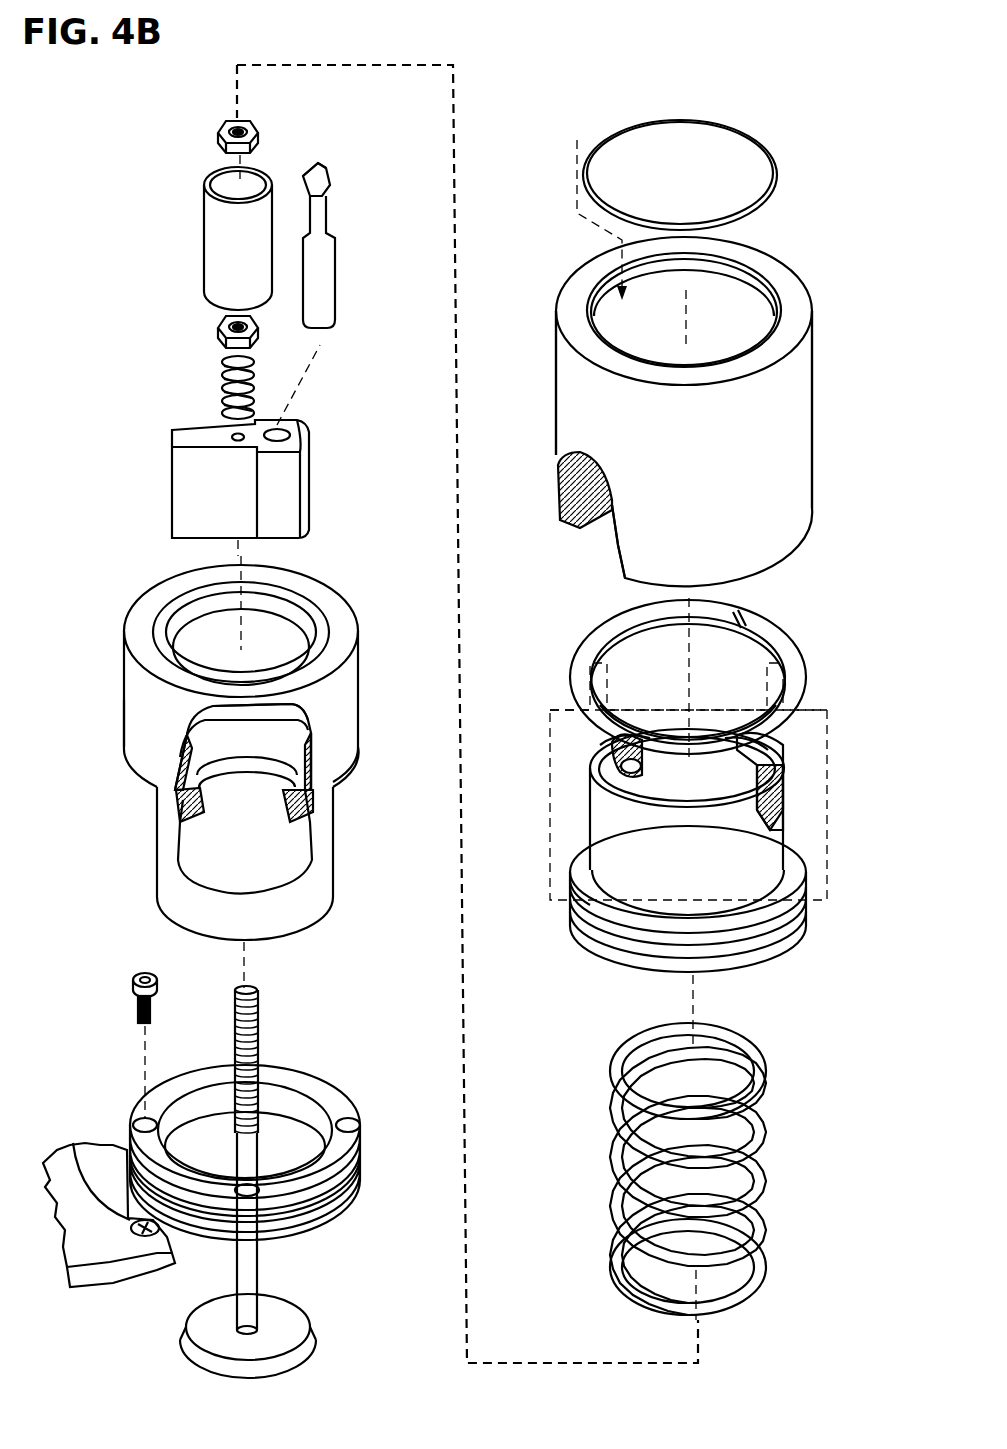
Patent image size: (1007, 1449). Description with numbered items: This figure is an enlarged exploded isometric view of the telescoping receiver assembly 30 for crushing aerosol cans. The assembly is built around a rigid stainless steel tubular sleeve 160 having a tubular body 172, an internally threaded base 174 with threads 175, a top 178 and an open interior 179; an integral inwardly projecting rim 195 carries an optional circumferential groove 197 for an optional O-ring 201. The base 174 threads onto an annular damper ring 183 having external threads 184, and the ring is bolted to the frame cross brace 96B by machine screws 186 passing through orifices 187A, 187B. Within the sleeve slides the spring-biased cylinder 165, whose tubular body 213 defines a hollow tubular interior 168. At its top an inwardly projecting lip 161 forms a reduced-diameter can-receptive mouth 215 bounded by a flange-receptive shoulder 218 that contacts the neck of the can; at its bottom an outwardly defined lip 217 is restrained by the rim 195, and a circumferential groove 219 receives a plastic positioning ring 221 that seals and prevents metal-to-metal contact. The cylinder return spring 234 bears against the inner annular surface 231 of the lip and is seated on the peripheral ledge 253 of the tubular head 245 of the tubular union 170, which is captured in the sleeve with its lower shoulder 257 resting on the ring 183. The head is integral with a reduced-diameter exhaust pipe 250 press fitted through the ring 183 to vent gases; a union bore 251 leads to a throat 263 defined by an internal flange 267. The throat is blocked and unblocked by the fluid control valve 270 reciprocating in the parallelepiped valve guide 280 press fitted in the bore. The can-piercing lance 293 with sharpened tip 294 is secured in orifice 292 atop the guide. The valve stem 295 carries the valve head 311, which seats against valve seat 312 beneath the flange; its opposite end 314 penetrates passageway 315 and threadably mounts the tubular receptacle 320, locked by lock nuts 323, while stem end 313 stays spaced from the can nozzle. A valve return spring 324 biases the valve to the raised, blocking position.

The telescoping receiver assembly 30 is at (507, 120).
The frame cross brace 96B is at (97, 1163).
The tubular sleeve 160 is at (825, 410).
The inwardly projecting lip 161 is at (612, 760).
The spring-biased cylinder 165 is at (835, 850).
The hollow tubular interior 168 is at (720, 775).
The tubular union 170 is at (118, 788).
The tubular body 172 is at (783, 478).
The internally threaded base 174 is at (560, 500).
The threads 175 is at (590, 522).
The top 178 is at (572, 285).
The open interior 179 is at (740, 300).
The annular damper ring 183 is at (375, 1175).
The external threads 184 is at (330, 1205).
The machine screws 186 is at (170, 945).
The orifice 187A is at (140, 1120).
The orifice 187B is at (360, 1118).
The inwardly projecting rim 195 is at (750, 308).
The circumferential groove 197 is at (730, 282).
The O-ring 201 is at (772, 160).
The tubular body 213 is at (610, 816).
The can-receptive mouth 215 is at (684, 700).
The outwardly defined lip 217 is at (548, 930).
The flange-receptive shoulder 218 is at (600, 742).
The circumferential groove 219 is at (798, 925).
The positioning ring 221 is at (778, 635).
The inner annular surface 231 is at (785, 805).
The cylinder return spring 234 is at (785, 1178).
The tubular head 245 is at (350, 692).
The exhaust pipe 250 is at (185, 902).
The union bore 251 is at (273, 640).
The peripheral ledge 253 is at (171, 628).
The lower shoulder 257 is at (350, 778).
The throat 263 is at (222, 782).
The internal flange 267 is at (280, 744).
The fluid control valve 270 is at (211, 1287).
The valve guide 280 is at (318, 472).
The orifice 292 is at (290, 430).
The can-piercing lance 293 is at (325, 288).
The sharpened tip 294 is at (300, 168).
The valve stem 295 is at (248, 1150).
The valve head 311 is at (290, 1322).
The valve seat 312 is at (210, 837).
The stem end 313 is at (258, 990).
The opposite end of stem 314 is at (258, 1050).
The passageway 315 is at (230, 432).
The tubular receptacle 320 is at (216, 233).
The lock nuts 323 is at (222, 133).
The valve return spring 324 is at (220, 368).